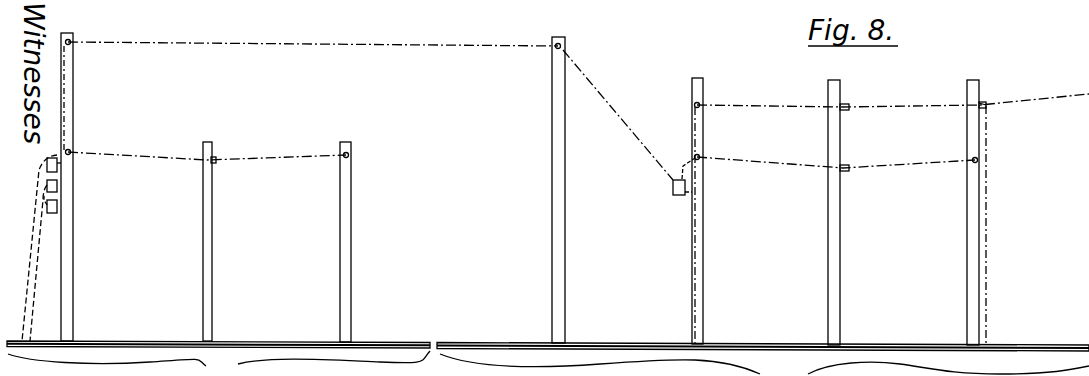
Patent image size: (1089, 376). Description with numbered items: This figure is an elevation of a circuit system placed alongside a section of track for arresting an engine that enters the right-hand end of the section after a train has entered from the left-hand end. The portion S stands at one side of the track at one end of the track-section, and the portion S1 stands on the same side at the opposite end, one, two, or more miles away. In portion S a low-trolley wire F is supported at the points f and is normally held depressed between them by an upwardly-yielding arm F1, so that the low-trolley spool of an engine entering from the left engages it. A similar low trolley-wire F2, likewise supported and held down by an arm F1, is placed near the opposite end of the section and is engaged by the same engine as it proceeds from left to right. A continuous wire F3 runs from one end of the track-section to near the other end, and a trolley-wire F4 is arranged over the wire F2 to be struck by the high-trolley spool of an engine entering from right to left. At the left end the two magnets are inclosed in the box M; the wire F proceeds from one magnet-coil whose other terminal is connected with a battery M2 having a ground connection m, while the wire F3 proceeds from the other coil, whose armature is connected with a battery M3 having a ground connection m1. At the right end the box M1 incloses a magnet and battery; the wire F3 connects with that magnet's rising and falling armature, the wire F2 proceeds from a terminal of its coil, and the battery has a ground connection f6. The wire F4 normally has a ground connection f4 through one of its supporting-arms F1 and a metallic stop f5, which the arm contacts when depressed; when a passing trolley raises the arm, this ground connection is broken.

The low-trolley wire F is at (300, 146).
The upwardly-yielding arm F1 is at (208, 158).
The low trolley-wire F2 is at (941, 163).
The continuous wire F3 is at (374, 43).
The trolley-wire F4 is at (1058, 96).
The wire supports f is at (70, 150).
The ground connection f4 is at (986, 202).
The metallic stop f5 is at (984, 108).
The ground connection f6 is at (699, 272).
The inclosing box M is at (50, 158).
The inclosing box M1 is at (673, 195).
The battery M2 is at (57, 186).
The battery M3 is at (57, 207).
The ground connection m is at (36, 218).
The ground connection m1 is at (38, 268).
The circuit-system portion S is at (218, 358).
The circuit-system portion S1 is at (763, 360).